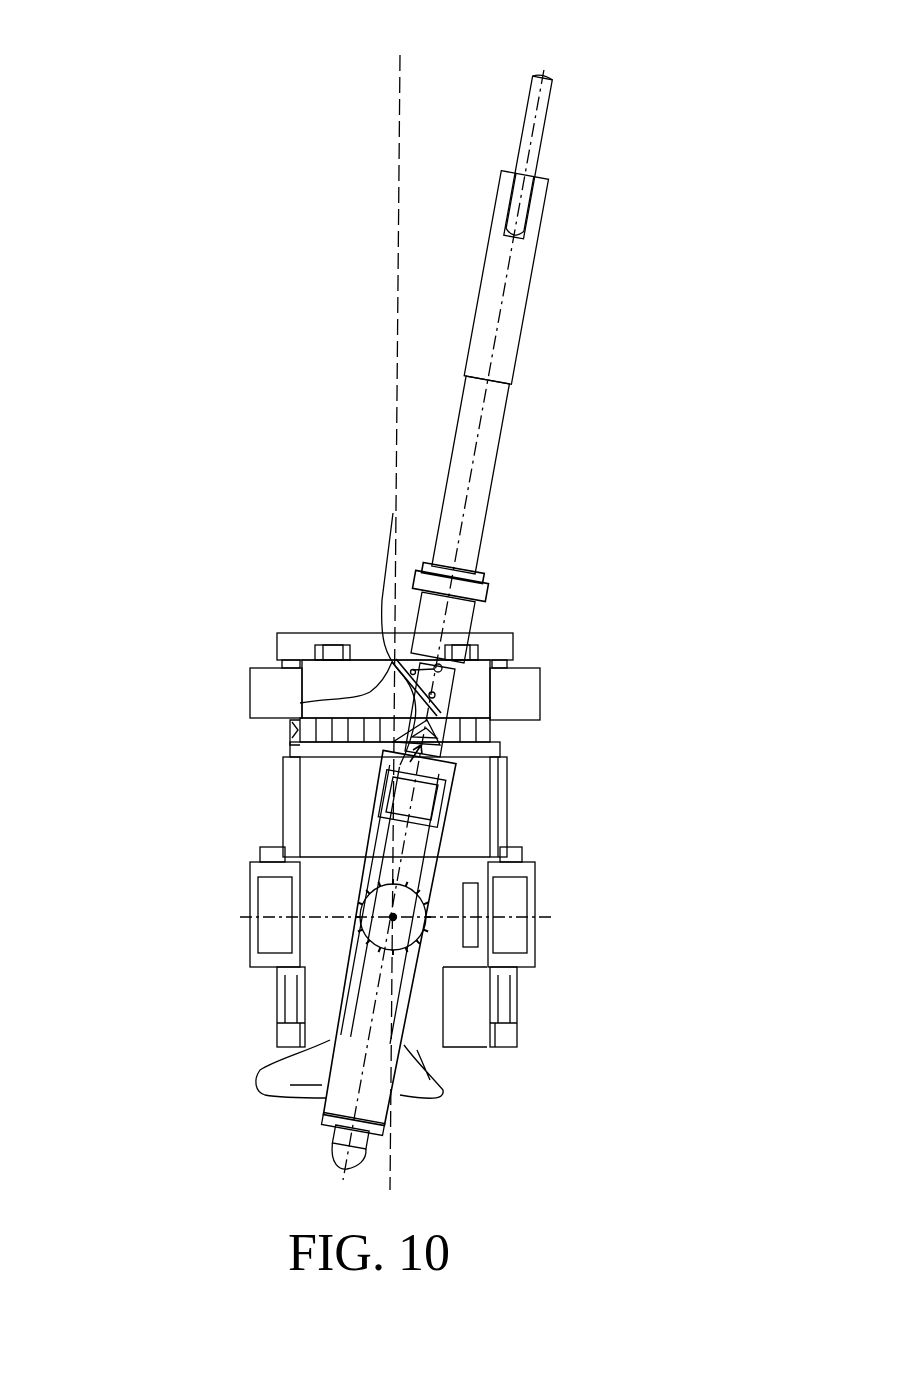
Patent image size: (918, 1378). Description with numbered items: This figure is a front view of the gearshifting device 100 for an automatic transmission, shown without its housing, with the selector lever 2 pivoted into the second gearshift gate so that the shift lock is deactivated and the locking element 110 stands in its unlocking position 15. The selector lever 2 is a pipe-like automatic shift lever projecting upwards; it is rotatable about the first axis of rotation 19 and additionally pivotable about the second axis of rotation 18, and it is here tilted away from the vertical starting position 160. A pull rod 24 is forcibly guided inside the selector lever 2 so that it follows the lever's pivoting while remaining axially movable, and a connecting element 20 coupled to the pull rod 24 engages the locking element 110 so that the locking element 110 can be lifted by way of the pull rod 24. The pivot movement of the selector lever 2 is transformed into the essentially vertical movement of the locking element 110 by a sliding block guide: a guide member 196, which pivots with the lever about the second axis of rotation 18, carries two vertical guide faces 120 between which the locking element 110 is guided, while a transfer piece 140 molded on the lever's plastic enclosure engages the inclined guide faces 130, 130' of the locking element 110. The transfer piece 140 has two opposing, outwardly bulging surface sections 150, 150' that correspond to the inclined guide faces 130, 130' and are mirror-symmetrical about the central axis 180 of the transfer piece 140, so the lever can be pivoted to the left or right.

The selector lever 2 is at (510, 307).
The pull rod 24 is at (532, 150).
The unlocking position 15 is at (543, 660).
The second axis of rotation 18 is at (243, 917).
The first axis of rotation 19 is at (393, 917).
The connecting element 20 is at (447, 698).
The gearshifting device 100 is at (213, 546).
The locking element 110 is at (343, 691).
The guide face 120 is at (335, 735).
The guide face 130 is at (416, 591).
The guide face 130' is at (280, 672).
The transfer piece 140 is at (393, 787).
The surface section 150 is at (504, 805).
The surface section 150' is at (247, 813).
The vertical starting position 160 is at (400, 62).
The central axis 180 is at (393, 513).
The guide member 196 is at (290, 735).